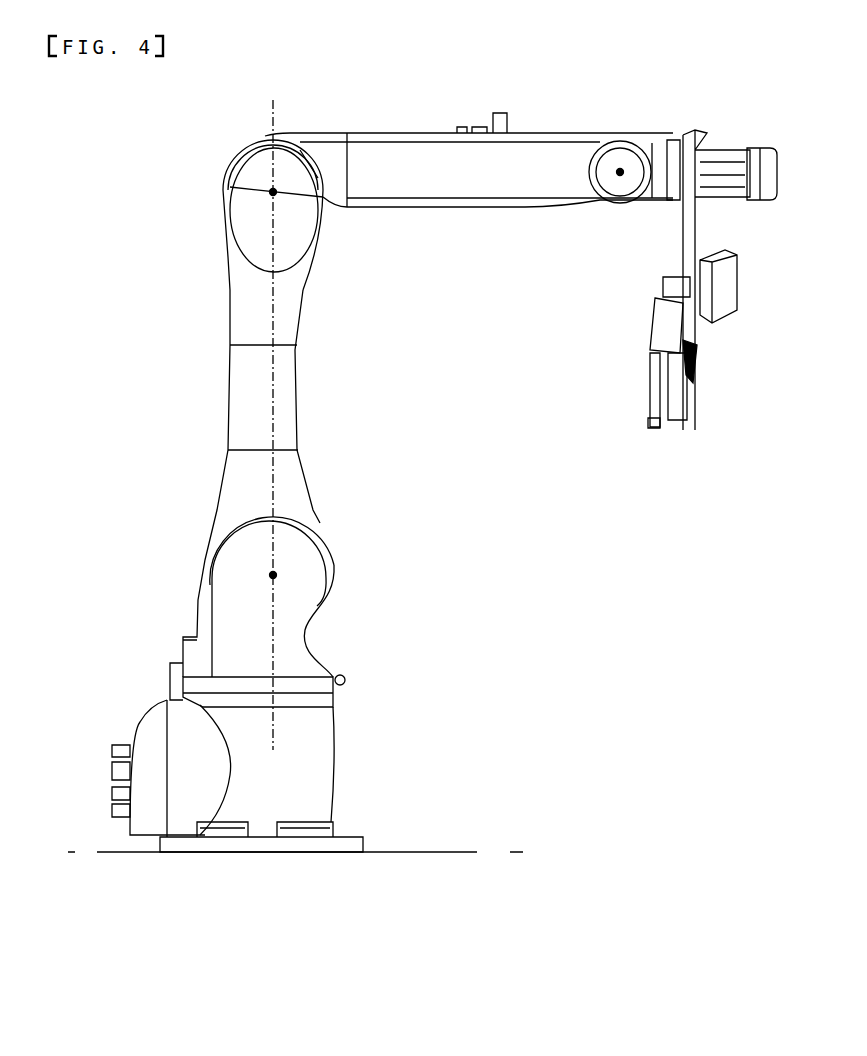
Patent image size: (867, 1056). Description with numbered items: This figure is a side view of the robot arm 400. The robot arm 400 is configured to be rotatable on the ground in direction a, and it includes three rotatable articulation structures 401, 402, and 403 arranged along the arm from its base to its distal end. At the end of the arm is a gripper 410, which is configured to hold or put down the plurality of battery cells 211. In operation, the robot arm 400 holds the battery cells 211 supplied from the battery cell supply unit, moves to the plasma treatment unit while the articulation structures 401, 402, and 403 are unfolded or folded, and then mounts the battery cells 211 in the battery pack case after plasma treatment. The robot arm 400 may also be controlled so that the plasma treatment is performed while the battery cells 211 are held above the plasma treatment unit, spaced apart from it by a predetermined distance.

The robot arm 400 is at (161, 117).
The articulation structure 401 is at (334, 533).
The articulation structure 402 is at (240, 127).
The articulation structure 403 is at (652, 124).
The gripper 410 is at (645, 364).
The battery cells 211 is at (668, 424).
The direction a is at (70, 833).